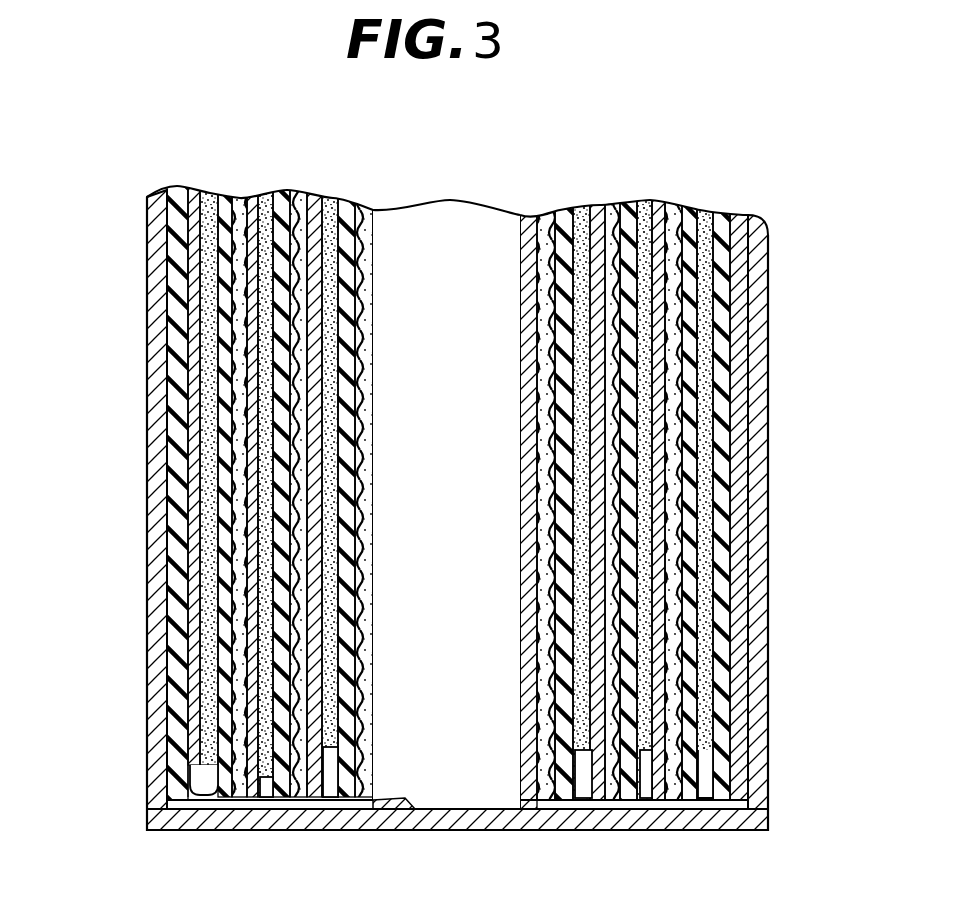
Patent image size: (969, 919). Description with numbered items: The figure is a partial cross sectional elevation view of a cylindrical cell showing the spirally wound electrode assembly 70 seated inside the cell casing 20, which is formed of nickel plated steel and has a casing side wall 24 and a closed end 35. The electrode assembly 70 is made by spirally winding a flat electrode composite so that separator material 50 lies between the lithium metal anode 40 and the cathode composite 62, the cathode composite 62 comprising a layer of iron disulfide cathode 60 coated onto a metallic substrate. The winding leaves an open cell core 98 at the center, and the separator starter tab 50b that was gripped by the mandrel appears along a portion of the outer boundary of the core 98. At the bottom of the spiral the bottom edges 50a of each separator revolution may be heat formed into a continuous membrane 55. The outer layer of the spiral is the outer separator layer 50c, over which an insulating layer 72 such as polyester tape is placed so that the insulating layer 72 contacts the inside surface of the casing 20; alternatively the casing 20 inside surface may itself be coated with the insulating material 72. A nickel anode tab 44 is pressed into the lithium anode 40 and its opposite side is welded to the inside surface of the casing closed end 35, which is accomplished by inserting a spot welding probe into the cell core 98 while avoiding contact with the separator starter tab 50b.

The cell casing 20 is at (147, 320).
The casing side wall 24 is at (147, 630).
The casing closed end 35 is at (642, 800).
The anode 40 is at (203, 192).
The anode tab 44 is at (393, 810).
The separator 50 is at (190, 186).
The separator bottom edges 50a is at (253, 798).
The separator starter tab 50b is at (530, 215).
The outer separator layer 50c is at (733, 593).
The continuous membrane 55 is at (327, 800).
The cathode 60 is at (238, 198).
The cathode composite 62 is at (230, 690).
The spirally wound electrode assembly 70 is at (185, 740).
The insulating layer 72 is at (160, 403).
The cell core 98 is at (410, 218).